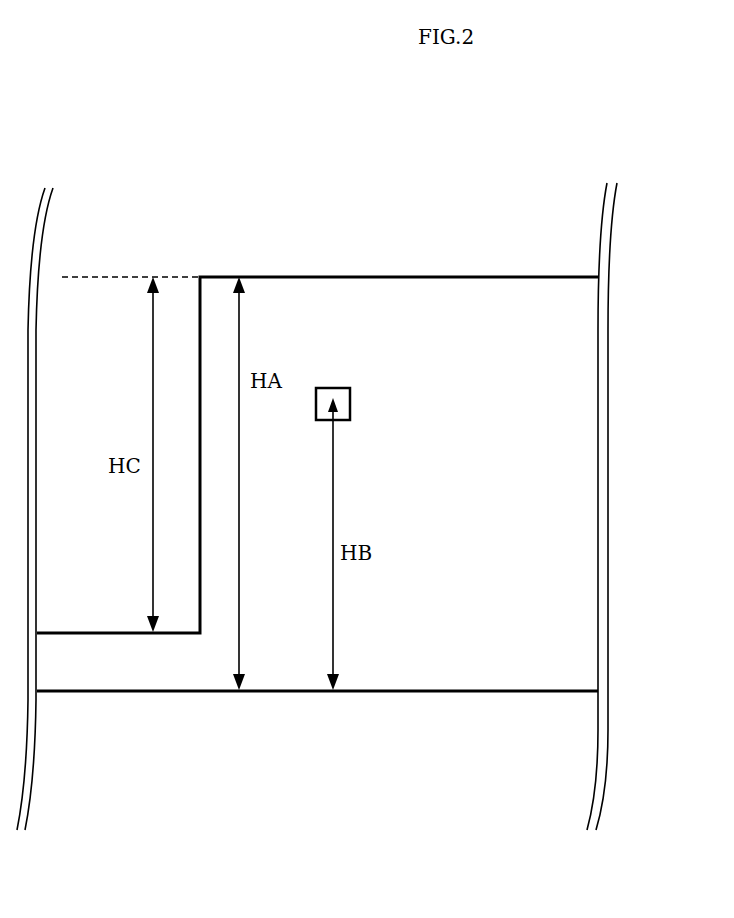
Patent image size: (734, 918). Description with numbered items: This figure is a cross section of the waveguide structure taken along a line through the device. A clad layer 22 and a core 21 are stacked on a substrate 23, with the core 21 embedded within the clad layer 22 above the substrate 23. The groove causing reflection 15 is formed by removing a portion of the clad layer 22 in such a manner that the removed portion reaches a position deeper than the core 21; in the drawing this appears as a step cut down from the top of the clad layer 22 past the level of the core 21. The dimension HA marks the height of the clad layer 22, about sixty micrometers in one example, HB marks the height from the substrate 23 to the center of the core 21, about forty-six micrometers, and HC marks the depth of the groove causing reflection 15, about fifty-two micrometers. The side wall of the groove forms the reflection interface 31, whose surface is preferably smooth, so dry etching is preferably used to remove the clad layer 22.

The groove causing reflection 15 is at (103, 292).
The core 21 is at (350, 403).
The clad layer 22 is at (570, 531).
The substrate 23 is at (398, 720).
The reflection interface 31 is at (200, 310).